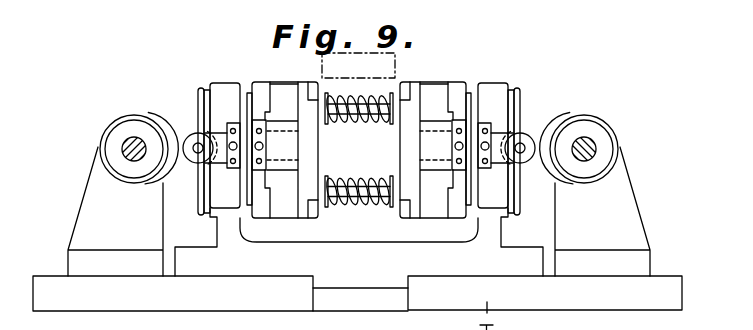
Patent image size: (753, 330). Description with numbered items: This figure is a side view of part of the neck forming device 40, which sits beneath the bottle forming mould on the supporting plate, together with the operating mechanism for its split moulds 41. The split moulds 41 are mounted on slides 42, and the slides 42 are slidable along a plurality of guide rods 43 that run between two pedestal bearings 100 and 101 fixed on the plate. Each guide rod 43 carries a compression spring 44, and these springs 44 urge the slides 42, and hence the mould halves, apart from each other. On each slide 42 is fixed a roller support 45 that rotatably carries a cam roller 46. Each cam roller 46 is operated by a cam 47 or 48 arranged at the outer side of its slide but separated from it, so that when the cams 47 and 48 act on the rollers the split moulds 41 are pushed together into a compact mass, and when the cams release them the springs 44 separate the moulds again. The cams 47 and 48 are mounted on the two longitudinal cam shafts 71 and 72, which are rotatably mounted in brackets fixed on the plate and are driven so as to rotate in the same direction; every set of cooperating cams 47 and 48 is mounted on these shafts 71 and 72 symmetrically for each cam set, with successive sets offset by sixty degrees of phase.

The neck forming device 40 is at (425, 71).
The split moulds 41 is at (312, 206).
The slides 42 is at (285, 92).
The guide rods 43 is at (362, 122).
The compression spring 44 is at (336, 123).
The roller support 45 is at (201, 141).
The cam roller 46 is at (194, 164).
The cam 47 is at (556, 112).
The cam 48 is at (156, 115).
The cam shaft 71 is at (588, 133).
The cam shaft 72 is at (132, 142).
The pedestal bearing 100 is at (490, 90).
The pedestal bearing 101 is at (222, 90).